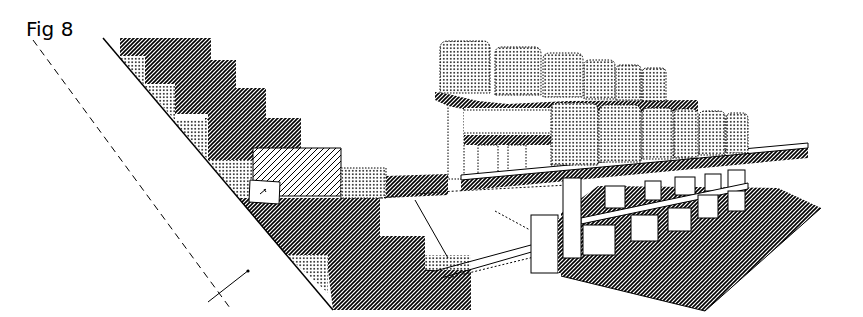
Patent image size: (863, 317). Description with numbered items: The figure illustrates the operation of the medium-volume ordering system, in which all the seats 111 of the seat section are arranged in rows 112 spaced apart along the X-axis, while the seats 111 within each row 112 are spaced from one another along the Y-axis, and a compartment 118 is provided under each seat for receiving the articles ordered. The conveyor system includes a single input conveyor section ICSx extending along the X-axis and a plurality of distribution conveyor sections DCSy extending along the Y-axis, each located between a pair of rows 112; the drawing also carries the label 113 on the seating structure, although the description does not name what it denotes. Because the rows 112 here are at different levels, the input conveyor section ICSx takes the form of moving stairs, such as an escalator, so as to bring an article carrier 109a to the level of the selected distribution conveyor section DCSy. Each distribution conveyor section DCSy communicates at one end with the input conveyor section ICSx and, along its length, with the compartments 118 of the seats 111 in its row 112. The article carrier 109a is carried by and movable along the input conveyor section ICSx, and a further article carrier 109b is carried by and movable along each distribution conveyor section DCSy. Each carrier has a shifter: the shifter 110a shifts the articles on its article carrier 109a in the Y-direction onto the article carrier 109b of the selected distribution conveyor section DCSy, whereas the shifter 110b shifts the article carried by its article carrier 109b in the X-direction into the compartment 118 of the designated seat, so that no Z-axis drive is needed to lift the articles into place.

The row 112 is at (422, 77).
The seat 111 is at (649, 134).
The seat deck platform 113 is at (462, 117).
The compartment 118 is at (487, 202).
The article carrier 109a is at (358, 156).
The article carrier 109b is at (414, 170).
The shifter 110a is at (263, 195).
The shifter 110b is at (440, 130).
The distribution conveyor section DCSy is at (493, 250).
The input conveyor section ICSx is at (204, 296).